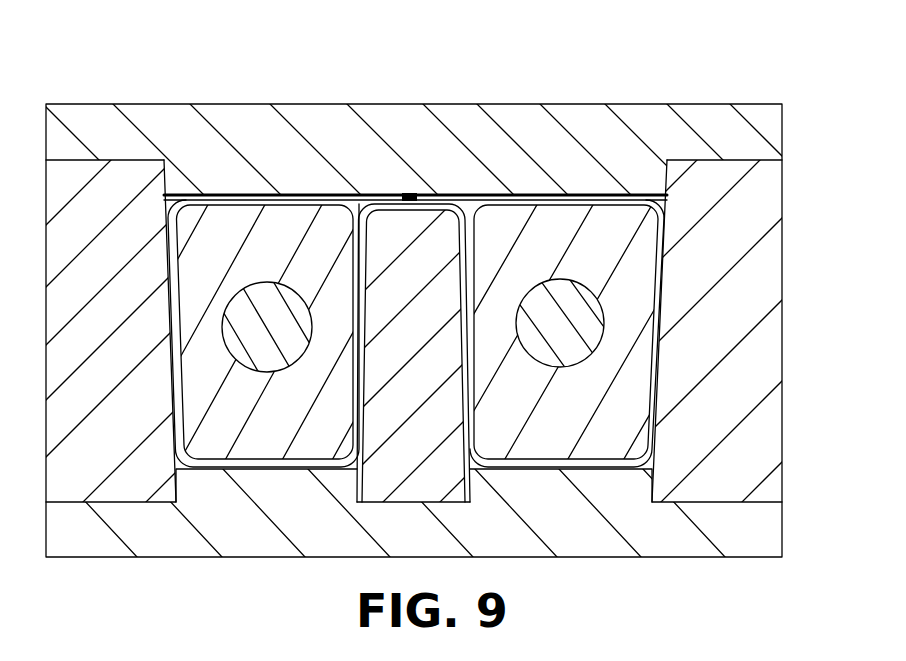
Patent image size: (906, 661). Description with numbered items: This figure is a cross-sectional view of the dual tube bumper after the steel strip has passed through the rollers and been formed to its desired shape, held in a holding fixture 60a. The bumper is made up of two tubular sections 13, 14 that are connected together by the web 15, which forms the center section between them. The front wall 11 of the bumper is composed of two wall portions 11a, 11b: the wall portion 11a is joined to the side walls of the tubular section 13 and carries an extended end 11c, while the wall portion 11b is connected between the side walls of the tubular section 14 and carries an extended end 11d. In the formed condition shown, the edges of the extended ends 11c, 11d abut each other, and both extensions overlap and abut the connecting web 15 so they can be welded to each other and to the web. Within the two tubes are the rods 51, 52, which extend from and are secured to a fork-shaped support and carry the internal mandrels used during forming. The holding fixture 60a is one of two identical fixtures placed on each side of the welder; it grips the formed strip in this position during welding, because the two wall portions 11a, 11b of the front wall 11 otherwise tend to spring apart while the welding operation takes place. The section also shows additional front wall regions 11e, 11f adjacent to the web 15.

The holding fixture 60a is at (545, 63).
The tubular section 13 is at (231, 186).
The tubular section 14 is at (616, 186).
The front wall 11 is at (313, 186).
The wall portion 11a is at (288, 192).
The wall portion 11b is at (553, 192).
The extended end 11c is at (375, 192).
The extended end 11d is at (445, 191).
The membrane web outer portion 11e is at (393, 192).
The membrane web inner portion 11f is at (420, 192).
The web 15 is at (403, 207).
The rod 51 is at (263, 357).
The rod 52 is at (553, 348).